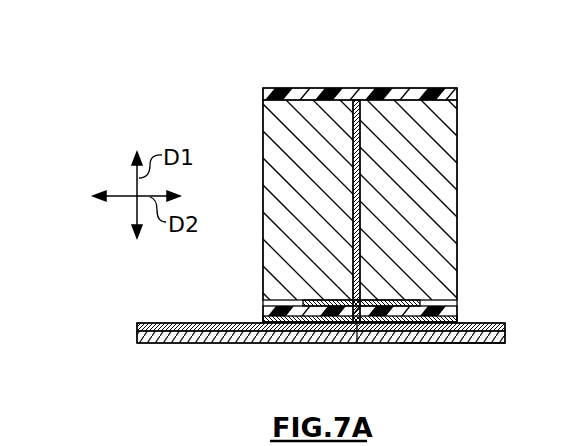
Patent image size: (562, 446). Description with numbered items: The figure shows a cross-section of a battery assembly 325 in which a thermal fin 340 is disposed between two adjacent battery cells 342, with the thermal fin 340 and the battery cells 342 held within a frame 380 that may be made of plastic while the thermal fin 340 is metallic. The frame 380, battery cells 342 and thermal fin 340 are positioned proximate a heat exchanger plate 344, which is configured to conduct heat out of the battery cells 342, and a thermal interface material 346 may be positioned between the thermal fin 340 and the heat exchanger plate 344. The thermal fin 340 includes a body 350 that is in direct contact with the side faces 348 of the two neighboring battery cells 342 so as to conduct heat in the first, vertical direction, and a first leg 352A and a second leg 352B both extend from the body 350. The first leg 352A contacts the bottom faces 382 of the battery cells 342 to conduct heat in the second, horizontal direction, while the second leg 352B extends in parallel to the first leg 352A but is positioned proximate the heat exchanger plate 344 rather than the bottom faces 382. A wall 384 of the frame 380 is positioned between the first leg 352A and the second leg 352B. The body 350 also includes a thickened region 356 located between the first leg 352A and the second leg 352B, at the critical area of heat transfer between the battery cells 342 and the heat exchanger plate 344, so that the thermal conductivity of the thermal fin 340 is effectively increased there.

The battery assembly 325 is at (395, 68).
The frame 380 is at (452, 74).
The battery cells 342 is at (272, 183).
The side faces 348 is at (357, 150).
The thermal fin 340 is at (370, 216).
The body 350 is at (360, 242).
The bottom faces 382 is at (325, 300).
The first leg 352A is at (390, 299).
The wall 384 is at (458, 316).
The thermal interface material 346 is at (178, 327).
The heat exchanger plate 344 is at (272, 344).
The thickened region 356 is at (358, 344).
The second leg 352B is at (440, 344).